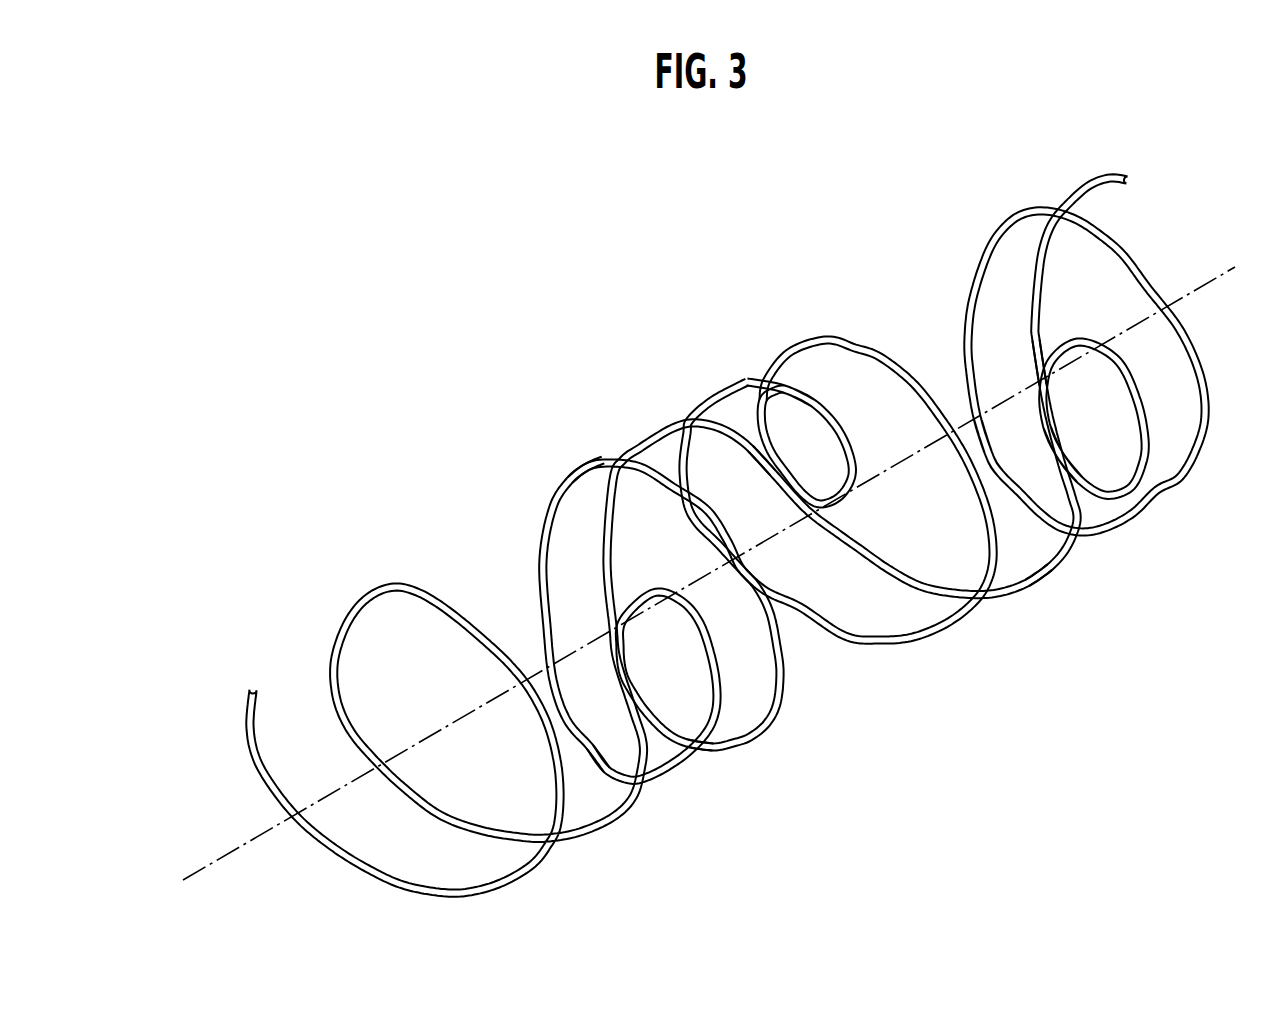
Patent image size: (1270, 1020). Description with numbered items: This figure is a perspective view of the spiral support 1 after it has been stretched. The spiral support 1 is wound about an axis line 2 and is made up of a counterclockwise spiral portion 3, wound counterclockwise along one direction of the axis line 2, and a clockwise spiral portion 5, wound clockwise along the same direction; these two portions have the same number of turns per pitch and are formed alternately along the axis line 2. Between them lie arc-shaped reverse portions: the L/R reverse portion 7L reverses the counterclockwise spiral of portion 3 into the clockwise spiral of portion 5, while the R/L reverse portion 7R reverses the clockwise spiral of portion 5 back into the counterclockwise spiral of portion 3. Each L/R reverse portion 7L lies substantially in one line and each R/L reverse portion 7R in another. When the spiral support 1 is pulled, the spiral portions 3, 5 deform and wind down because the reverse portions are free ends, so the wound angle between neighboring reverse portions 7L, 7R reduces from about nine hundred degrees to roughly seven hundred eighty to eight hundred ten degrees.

The spiral support 1 is at (605, 291).
The axis line 2 is at (217, 857).
The counterclockwise spiral portion 3 is at (865, 484).
The clockwise spiral portion 5 is at (516, 647).
The L/R reverse portion 7L is at (655, 590).
The R/L reverse portion 7R is at (847, 500).